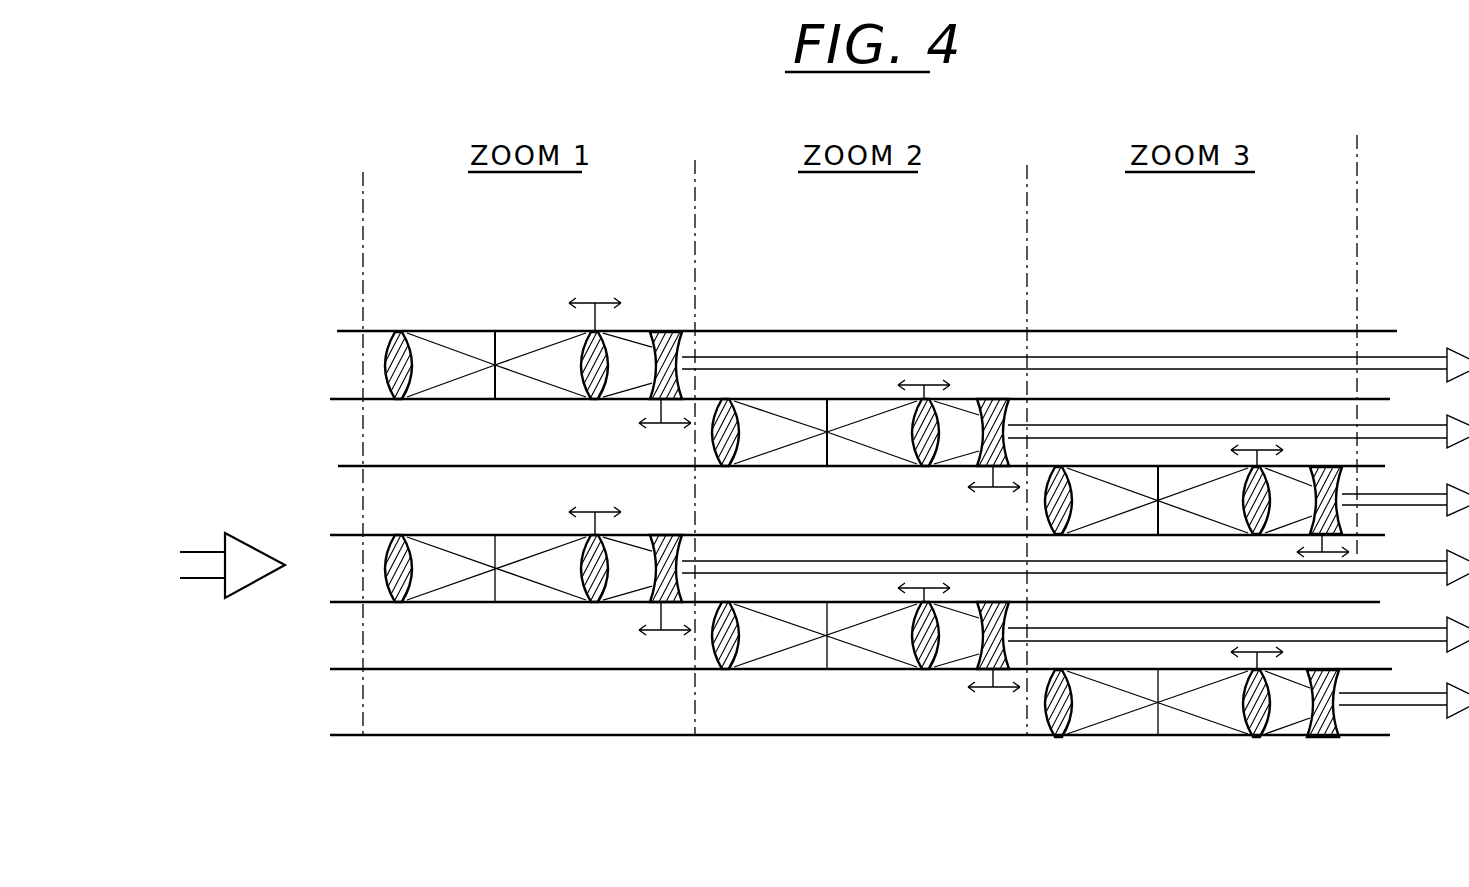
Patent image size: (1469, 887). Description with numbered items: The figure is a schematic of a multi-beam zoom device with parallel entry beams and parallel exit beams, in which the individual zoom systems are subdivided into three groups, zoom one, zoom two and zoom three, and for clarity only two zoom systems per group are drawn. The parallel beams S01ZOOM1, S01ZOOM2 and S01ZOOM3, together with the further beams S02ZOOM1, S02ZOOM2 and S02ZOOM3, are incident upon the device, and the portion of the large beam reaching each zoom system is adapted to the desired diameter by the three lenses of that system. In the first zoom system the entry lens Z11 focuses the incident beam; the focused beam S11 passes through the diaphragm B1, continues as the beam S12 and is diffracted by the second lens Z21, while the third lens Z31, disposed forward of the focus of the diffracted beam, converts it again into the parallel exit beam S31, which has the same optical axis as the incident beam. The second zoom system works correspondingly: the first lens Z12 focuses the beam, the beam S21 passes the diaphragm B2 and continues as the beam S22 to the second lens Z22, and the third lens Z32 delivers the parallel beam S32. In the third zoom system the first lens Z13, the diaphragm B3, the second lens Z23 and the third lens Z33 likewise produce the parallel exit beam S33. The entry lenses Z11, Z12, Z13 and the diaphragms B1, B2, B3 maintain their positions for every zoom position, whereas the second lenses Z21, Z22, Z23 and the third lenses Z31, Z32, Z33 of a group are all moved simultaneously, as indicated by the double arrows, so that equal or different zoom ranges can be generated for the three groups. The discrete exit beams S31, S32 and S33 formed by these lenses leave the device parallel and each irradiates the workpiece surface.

The first lens of first zoom system Z11 is at (398, 330).
The focused beam S11 is at (455, 365).
The diaphragm B1 is at (500, 348).
The second beam section of zoom 1 S12 is at (560, 360).
The second lens of first zoom system Z21 is at (607, 345).
The third lens of first zoom system Z31 is at (668, 336).
The parallel exit beam of first zoom system S31 is at (786, 358).
The first lens of second zoom system Z12 is at (725, 470).
The focused beam of second zoom system S21 is at (772, 435).
The diaphragm B2 is at (830, 412).
The second beam section of zoom 2 S22 is at (950, 437).
The second lens of second zoom system Z22 is at (888, 460).
The third lens of second zoom system Z32 is at (985, 462).
The parallel exit beam of second zoom system S32 is at (1250, 432).
The first lens of third zoom system Z13 is at (1062, 478).
The diaphragm B3 is at (1152, 470).
The second lens of third zoom system Z23 is at (1228, 500).
The third lens of third zoom system Z33 is at (1327, 470).
The parallel exit beam of third zoom system S33 is at (1378, 502).
The incident beam of first zoom system S01ZOOM1 is at (347, 347).
The incident beam of second zoom system S01ZOOM2 is at (328, 437).
The incident beam of third zoom system S01ZOOM3 is at (325, 505).
The incident beam of first zoom system S02ZOOM1 is at (335, 565).
The incident beam of second zoom system S02ZOOM2 is at (335, 645).
The incident beam of third zoom system S02ZOOM3 is at (330, 718).